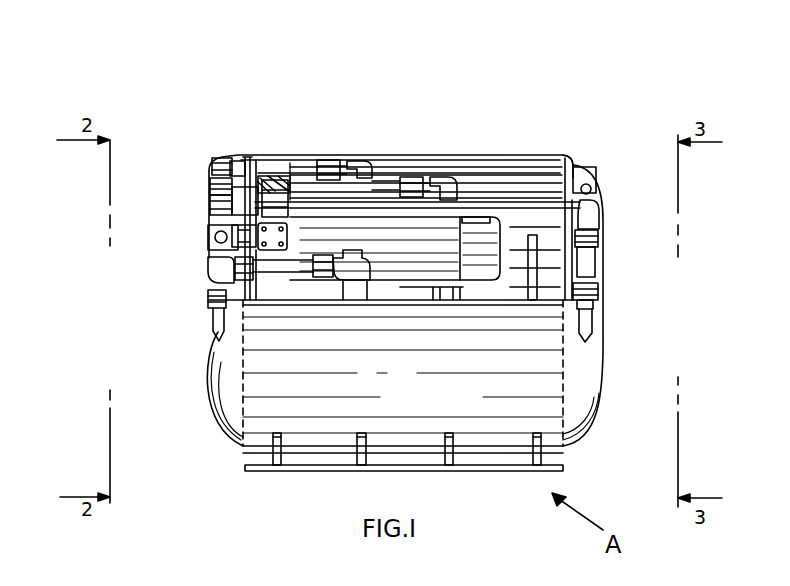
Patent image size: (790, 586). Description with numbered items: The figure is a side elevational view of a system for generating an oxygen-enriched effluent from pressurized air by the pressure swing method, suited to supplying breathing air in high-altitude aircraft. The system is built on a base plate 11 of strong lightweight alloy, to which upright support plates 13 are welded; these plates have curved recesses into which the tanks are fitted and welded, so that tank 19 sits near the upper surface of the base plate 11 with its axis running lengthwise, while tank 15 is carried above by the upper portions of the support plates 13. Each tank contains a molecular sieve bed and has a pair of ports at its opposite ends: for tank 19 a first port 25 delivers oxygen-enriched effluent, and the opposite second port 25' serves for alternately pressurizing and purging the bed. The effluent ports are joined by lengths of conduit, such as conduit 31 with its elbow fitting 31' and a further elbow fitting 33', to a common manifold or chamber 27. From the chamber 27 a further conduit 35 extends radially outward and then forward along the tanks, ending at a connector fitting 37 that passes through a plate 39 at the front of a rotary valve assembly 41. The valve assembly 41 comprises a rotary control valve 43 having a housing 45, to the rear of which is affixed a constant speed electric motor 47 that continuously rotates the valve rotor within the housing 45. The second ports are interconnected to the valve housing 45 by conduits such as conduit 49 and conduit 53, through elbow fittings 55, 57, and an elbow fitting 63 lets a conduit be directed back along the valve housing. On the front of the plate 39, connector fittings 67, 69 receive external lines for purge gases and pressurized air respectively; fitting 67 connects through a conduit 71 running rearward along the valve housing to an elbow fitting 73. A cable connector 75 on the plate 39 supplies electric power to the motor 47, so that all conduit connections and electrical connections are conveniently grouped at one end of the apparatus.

The base plate 11 is at (283, 467).
The upright support plates 13 is at (267, 456).
The tank 15 is at (523, 200).
The tank 19 is at (205, 383).
The port 25 is at (618, 325).
The port 25' is at (173, 321).
The common manifold or chamber 27 is at (600, 218).
The conduit 31 is at (616, 288).
The elbow fitting 31' is at (618, 246).
The elbow fitting 33' is at (614, 149).
The conduit 35 is at (560, 160).
The connector fitting 37 is at (217, 200).
The plate 39 is at (247, 160).
The rotary valve assembly 41 is at (376, 173).
The rotary control valve 43 is at (328, 294).
The valve housing 45 is at (428, 290).
The constant speed electric motor 47 is at (482, 215).
The conduit 49 is at (302, 165).
The conduit 53 is at (210, 291).
The elbow fitting 55 is at (355, 167).
The elbow fitting 57 is at (333, 277).
The elbow fitting 63 is at (213, 263).
The connector fitting 67 is at (220, 170).
The connector fitting 69 is at (212, 237).
The conduit 71 is at (392, 182).
The elbow fitting 73 is at (444, 174).
The cable connector 75 is at (210, 227).